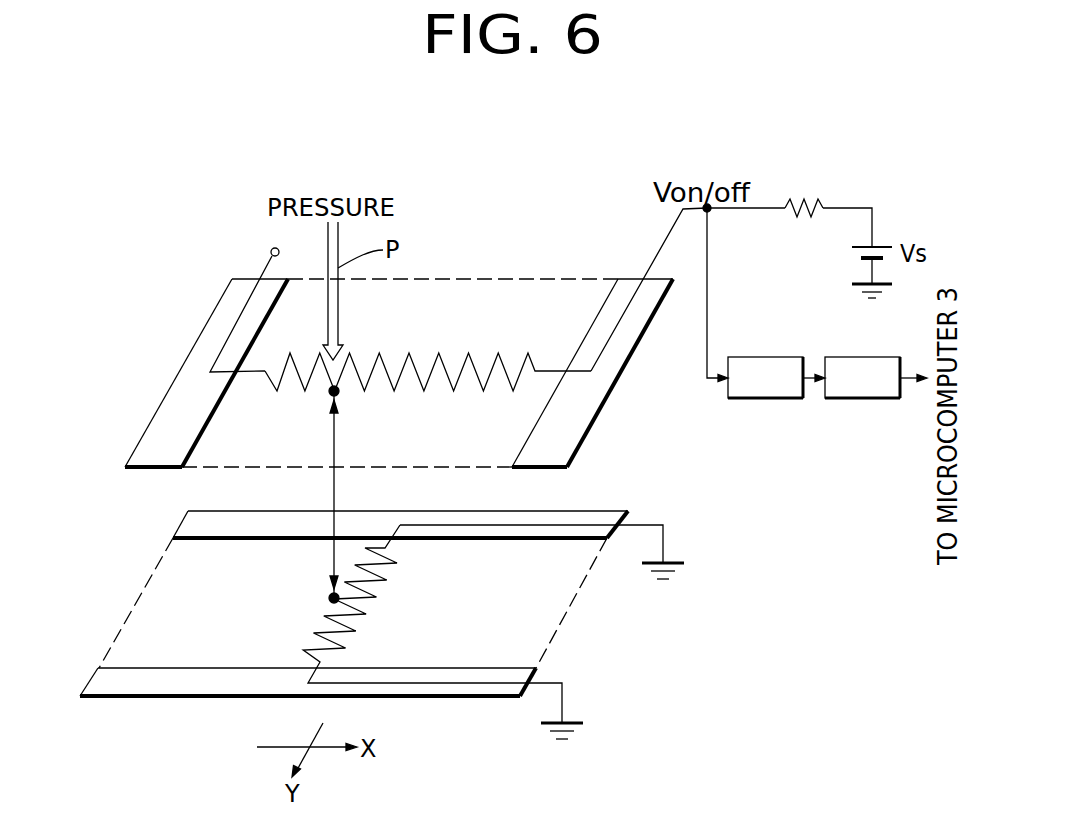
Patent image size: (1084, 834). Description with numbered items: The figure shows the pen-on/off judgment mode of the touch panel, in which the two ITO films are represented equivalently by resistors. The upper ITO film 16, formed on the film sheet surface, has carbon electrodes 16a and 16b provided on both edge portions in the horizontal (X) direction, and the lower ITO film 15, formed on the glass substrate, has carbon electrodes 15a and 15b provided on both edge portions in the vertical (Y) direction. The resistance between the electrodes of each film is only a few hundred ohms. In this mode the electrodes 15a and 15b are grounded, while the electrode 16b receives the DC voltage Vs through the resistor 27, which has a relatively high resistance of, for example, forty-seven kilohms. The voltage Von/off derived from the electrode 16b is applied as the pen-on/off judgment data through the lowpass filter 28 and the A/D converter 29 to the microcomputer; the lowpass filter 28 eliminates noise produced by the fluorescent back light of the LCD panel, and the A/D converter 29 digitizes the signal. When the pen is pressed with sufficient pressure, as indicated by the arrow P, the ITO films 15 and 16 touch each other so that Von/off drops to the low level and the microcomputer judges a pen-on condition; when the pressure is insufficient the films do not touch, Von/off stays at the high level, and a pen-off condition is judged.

The ITO film 15 is at (363, 615).
The electrode 15a is at (185, 523).
The electrode 15b is at (173, 683).
The ITO film 16 is at (410, 357).
The electrode 16a is at (197, 380).
The electrode 16b is at (572, 438).
The resistor 27 is at (797, 203).
The lowpass filter 28 is at (783, 400).
The A/D converter 29 is at (877, 400).